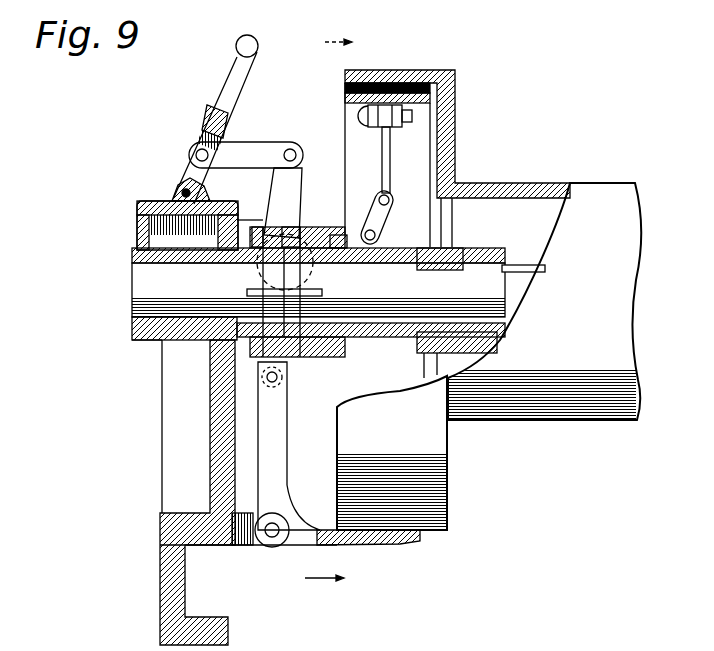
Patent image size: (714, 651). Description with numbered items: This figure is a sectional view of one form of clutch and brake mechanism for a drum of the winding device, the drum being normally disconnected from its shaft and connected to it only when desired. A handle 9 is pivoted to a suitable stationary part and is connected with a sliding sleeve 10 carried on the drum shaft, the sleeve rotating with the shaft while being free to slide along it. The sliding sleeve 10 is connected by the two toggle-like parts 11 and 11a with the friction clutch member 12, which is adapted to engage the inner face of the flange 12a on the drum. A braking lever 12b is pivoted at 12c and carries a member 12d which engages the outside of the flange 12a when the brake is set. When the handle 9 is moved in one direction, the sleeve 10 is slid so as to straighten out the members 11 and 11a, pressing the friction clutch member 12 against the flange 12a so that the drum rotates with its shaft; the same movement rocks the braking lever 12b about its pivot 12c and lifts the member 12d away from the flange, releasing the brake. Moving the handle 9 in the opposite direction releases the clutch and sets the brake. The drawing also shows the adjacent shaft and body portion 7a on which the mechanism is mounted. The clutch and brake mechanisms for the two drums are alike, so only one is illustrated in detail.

The handle 9 is at (256, 44).
The sliding sleeve 10 is at (314, 247).
The connecting part 11 is at (388, 210).
The connecting part 11a is at (386, 158).
The friction clutch member 12 is at (407, 82).
The flange 12a is at (370, 70).
The braking lever 12b is at (277, 433).
The pivot 12c is at (268, 536).
The brake member 12d is at (375, 545).
The machine body 7a is at (504, 288).